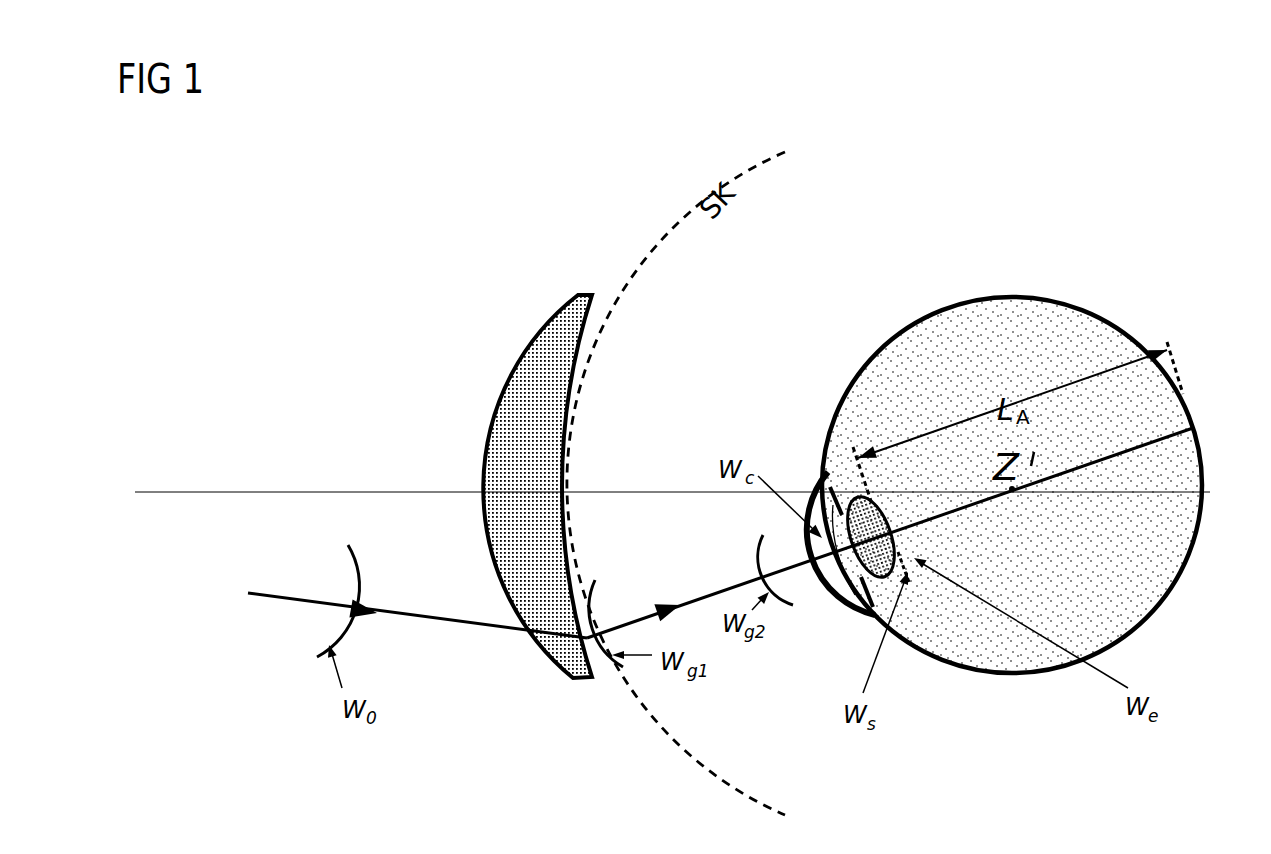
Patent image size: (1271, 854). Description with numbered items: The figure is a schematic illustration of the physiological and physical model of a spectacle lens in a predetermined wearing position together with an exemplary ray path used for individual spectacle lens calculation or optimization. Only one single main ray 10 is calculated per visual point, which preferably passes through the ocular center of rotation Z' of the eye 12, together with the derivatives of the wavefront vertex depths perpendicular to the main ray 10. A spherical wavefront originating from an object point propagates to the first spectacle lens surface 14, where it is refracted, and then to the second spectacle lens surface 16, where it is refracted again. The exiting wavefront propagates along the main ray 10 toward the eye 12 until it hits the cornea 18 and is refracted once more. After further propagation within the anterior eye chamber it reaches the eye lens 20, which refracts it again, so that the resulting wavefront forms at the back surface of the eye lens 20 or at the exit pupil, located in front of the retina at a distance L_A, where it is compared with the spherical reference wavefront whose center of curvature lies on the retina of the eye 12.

The main ray 10 is at (283, 593).
The eye 12 is at (1185, 539).
The first surface of the spectacle lens 14 is at (526, 357).
The second surface of the spectacle lens 16 is at (592, 332).
The corneal front surface 18 is at (838, 603).
The eye lens 20 is at (823, 470).